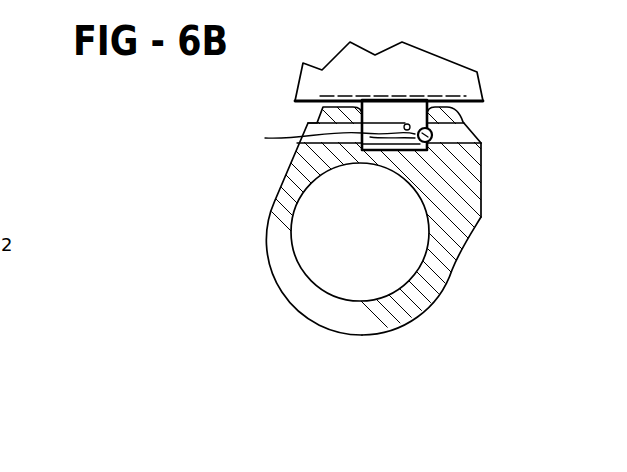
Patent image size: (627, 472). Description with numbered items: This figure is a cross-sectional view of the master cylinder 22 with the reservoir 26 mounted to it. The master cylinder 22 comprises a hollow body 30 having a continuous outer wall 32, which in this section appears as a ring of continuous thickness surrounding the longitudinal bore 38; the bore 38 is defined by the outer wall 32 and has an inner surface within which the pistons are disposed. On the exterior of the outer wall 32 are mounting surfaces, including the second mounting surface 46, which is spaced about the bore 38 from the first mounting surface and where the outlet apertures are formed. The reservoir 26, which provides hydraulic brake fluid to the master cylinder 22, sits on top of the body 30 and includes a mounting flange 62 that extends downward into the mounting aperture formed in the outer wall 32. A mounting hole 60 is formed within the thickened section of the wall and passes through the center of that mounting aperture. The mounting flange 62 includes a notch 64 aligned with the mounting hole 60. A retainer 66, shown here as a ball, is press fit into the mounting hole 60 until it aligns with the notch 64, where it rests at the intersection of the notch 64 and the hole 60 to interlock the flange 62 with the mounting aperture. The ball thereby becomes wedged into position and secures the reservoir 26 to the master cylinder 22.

The master cylinder 22 is at (270, 301).
The reservoir 26 is at (437, 72).
The hollow body 30 is at (462, 262).
The outer wall 32 is at (285, 224).
The longitudinal bore 38 is at (425, 232).
The second mounting surface 46 is at (481, 181).
The mounting hole 60 is at (466, 131).
The mounting flange 62 is at (380, 110).
The notch 64 is at (432, 121).
The retainer 66 is at (325, 136).